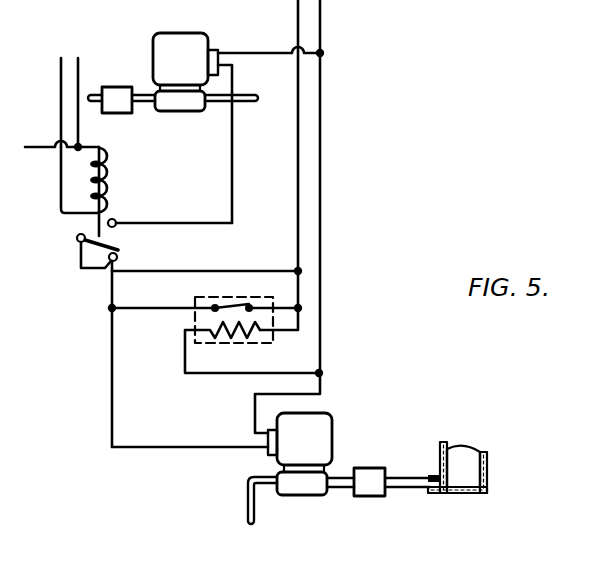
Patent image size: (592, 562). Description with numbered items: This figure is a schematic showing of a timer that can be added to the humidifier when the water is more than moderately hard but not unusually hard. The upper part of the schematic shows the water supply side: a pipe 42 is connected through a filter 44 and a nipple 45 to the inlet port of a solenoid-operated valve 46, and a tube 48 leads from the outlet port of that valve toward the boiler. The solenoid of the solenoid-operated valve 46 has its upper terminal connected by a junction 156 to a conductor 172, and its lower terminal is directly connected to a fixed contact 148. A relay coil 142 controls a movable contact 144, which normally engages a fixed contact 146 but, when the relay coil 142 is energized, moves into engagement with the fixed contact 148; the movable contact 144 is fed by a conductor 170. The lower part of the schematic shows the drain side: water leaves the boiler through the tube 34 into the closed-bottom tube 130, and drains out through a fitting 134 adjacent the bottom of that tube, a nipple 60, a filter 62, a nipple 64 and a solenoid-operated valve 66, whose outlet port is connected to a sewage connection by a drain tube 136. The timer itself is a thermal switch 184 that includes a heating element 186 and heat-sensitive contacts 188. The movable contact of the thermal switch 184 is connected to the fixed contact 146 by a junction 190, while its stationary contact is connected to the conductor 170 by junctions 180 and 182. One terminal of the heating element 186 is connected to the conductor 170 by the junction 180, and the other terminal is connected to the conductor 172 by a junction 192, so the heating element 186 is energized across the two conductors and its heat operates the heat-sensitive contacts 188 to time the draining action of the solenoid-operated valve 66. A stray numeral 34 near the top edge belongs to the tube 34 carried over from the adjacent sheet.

The tube 34 is at (545, 4).
The pipe 42 is at (91, 92).
The filter 44 is at (118, 114).
The nipple 45 is at (138, 94).
The solenoid-operated valve 46 is at (196, 111).
The tube 48 is at (248, 106).
The nipple 60 is at (398, 477).
The filter 62 is at (372, 491).
The nipple 64 is at (342, 477).
The solenoid-operated valve 66 is at (298, 497).
The tube 130 is at (475, 448).
The fitting 134 is at (431, 495).
The drain tube 136 is at (245, 505).
The relay coil 142 is at (108, 173).
The movable contact 144 is at (120, 249).
The fixed contact 146 is at (110, 254).
The fixed contact 148 is at (115, 220).
The junction 156 is at (324, 54).
The conductor 170 is at (298, 13).
The conductor 172 is at (321, 15).
The junction 180 is at (302, 309).
The junction 182 is at (297, 270).
The thermal switch 184 is at (197, 317).
The heating element 186 is at (222, 337).
The heat-sensitive contacts 188 is at (224, 303).
The junction 190 is at (108, 310).
The junction 192 is at (323, 373).